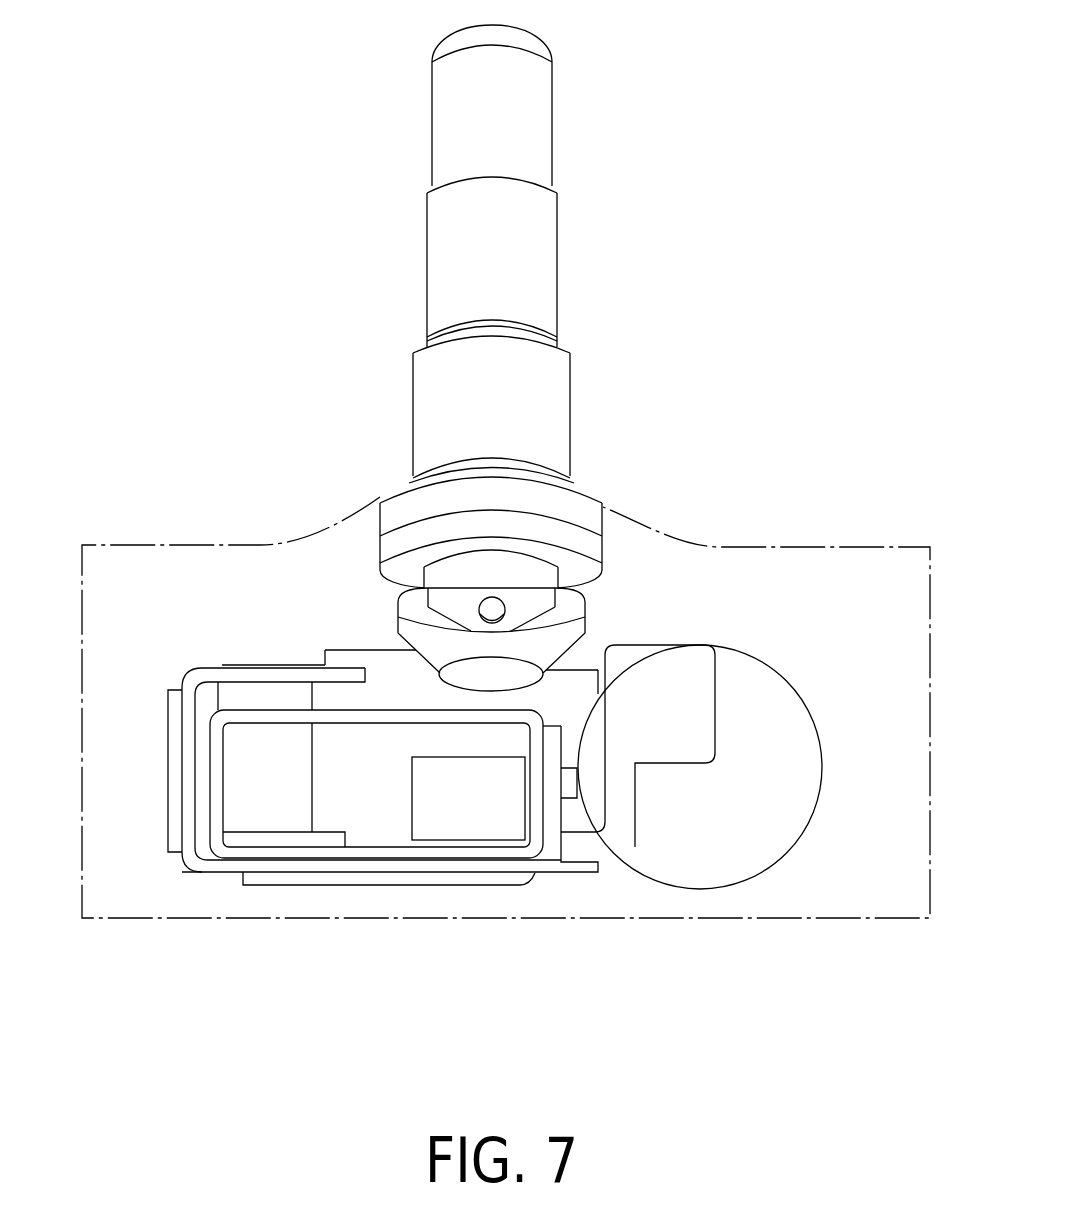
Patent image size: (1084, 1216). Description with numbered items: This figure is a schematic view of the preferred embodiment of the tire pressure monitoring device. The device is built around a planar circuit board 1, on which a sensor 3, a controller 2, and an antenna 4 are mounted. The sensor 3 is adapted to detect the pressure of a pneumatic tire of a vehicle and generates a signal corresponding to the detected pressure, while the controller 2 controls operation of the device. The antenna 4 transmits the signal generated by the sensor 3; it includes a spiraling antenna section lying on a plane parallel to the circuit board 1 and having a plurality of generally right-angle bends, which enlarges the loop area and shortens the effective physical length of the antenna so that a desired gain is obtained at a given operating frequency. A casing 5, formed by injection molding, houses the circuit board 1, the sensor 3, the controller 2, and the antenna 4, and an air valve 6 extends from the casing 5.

The circuit board 1 is at (576, 686).
The controller 2 is at (500, 826).
The sensor 3 is at (277, 803).
The antenna 4 is at (218, 789).
The casing 5 is at (788, 540).
The air valve 6 is at (557, 378).